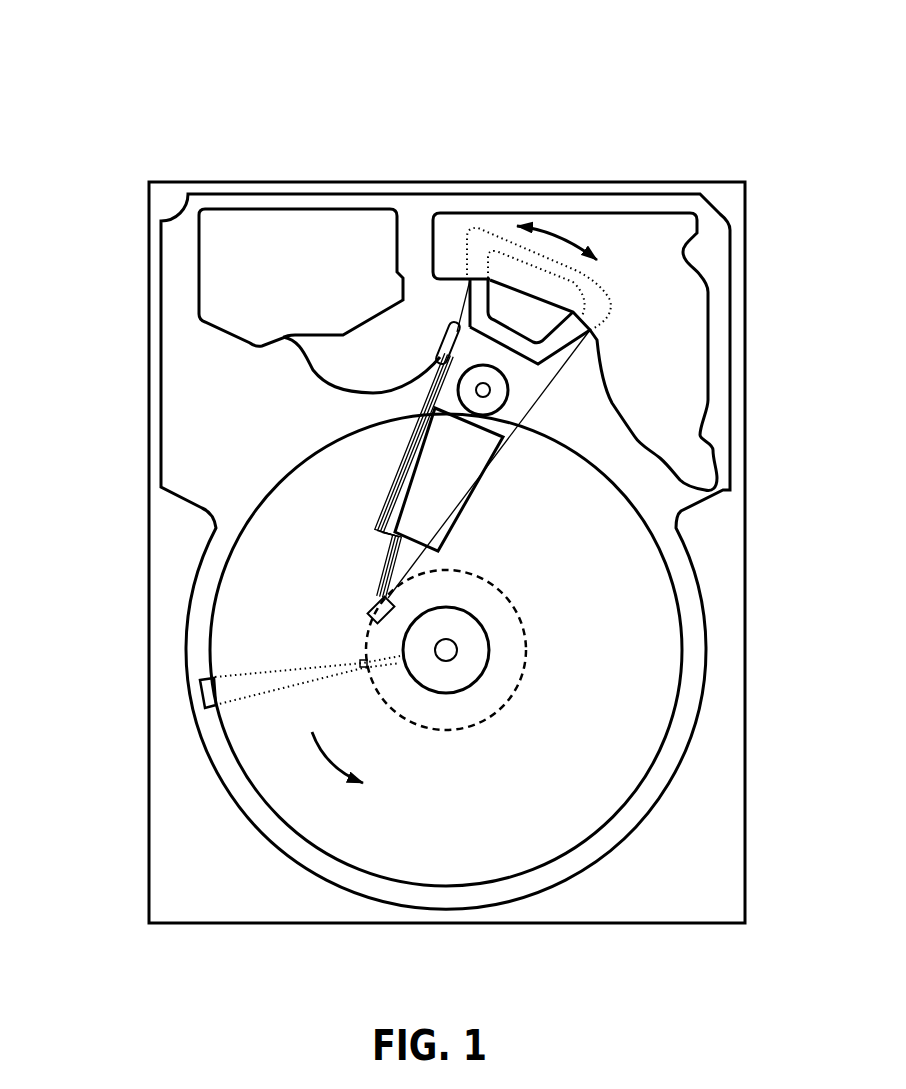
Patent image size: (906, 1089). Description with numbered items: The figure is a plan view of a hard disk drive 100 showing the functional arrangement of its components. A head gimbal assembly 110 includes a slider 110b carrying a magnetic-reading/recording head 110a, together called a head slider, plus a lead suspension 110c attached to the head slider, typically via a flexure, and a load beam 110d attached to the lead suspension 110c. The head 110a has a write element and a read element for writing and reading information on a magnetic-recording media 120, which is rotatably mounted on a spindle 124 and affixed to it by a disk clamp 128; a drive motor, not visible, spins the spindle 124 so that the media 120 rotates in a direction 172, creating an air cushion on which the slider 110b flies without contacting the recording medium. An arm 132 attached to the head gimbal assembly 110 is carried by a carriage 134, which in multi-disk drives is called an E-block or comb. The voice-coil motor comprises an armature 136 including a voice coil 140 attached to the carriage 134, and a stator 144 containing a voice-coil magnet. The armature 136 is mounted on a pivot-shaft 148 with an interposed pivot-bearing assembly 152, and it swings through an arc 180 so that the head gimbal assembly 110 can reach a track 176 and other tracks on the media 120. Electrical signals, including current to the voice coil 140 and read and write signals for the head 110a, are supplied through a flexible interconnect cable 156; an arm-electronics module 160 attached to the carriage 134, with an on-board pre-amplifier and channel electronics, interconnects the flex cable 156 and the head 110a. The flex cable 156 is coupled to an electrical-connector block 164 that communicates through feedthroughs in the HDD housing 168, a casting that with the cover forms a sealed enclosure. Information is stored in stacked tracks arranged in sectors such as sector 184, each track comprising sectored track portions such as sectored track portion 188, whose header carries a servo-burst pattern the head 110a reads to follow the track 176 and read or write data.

The hard disk drive 100 is at (85, 72).
The head gimbal assembly 110 is at (239, 488).
The magnetic-reading/recording head 110a is at (363, 623).
The slider 110b is at (368, 608).
The lead suspension 110c is at (377, 567).
The load beam 110d is at (377, 532).
The magnetic-recording media 120 is at (628, 603).
The spindle 124 is at (457, 648).
The disk clamp 128 is at (470, 665).
The arm 132 is at (440, 497).
The carriage 134 is at (515, 420).
The armature 136 is at (462, 310).
The voice coil 140 is at (480, 290).
The stator 144 is at (680, 300).
The pivot-shaft 148 is at (505, 390).
The pivot-bearing assembly 152 is at (500, 408).
The flexible interconnect cable 156 is at (313, 370).
The arm-electronics module 160 is at (440, 360).
The electrical-connector block 164 is at (223, 275).
The HDD housing 168 is at (727, 193).
The direction of media rotation 172 is at (342, 760).
The track 176 is at (517, 613).
The arc 180 is at (540, 285).
The sector 184 is at (200, 690).
The sectored track portion 188 is at (360, 660).